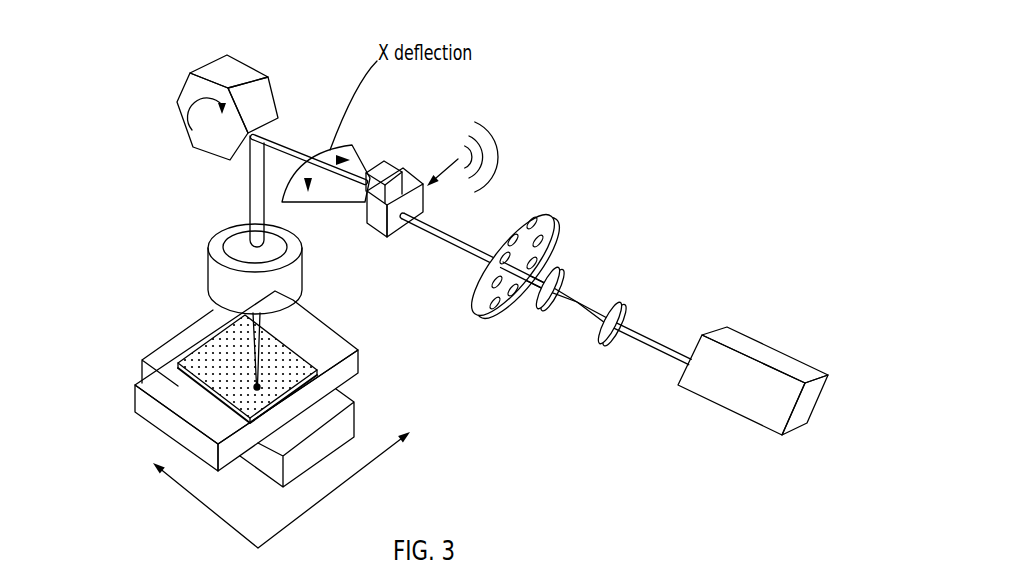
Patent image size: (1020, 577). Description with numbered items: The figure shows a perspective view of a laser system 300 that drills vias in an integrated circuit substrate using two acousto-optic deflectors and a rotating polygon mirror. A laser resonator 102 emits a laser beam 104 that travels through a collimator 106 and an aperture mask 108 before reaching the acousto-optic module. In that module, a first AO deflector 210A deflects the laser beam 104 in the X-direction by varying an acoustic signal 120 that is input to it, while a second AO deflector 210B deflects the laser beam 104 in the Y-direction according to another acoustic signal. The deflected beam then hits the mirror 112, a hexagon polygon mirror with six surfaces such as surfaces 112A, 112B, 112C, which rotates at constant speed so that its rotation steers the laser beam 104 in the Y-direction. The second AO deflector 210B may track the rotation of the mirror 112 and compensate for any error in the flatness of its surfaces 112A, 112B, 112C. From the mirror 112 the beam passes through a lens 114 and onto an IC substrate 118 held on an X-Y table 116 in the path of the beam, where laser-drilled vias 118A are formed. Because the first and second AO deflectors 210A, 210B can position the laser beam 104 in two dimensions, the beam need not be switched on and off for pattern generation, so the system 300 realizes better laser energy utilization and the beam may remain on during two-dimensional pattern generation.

The laser system 300 is at (677, 48).
The laser resonator 102 is at (777, 329).
The laser beam 104 is at (648, 336).
The collimator 106 is at (599, 289).
The aperture mask 108 is at (545, 189).
The mirror 112 is at (246, 139).
The surface 112A is at (240, 149).
The surface 112B is at (260, 96).
The surface 112C is at (227, 80).
The lens 114 is at (320, 268).
The X-Y table 116 is at (112, 374).
The IC substrate 118 is at (291, 367).
The laser-drilled vias 118A is at (254, 388).
The acoustic signal 120 is at (473, 121).
The first AO deflector 210A is at (414, 166).
The second AO deflector 210B is at (386, 150).